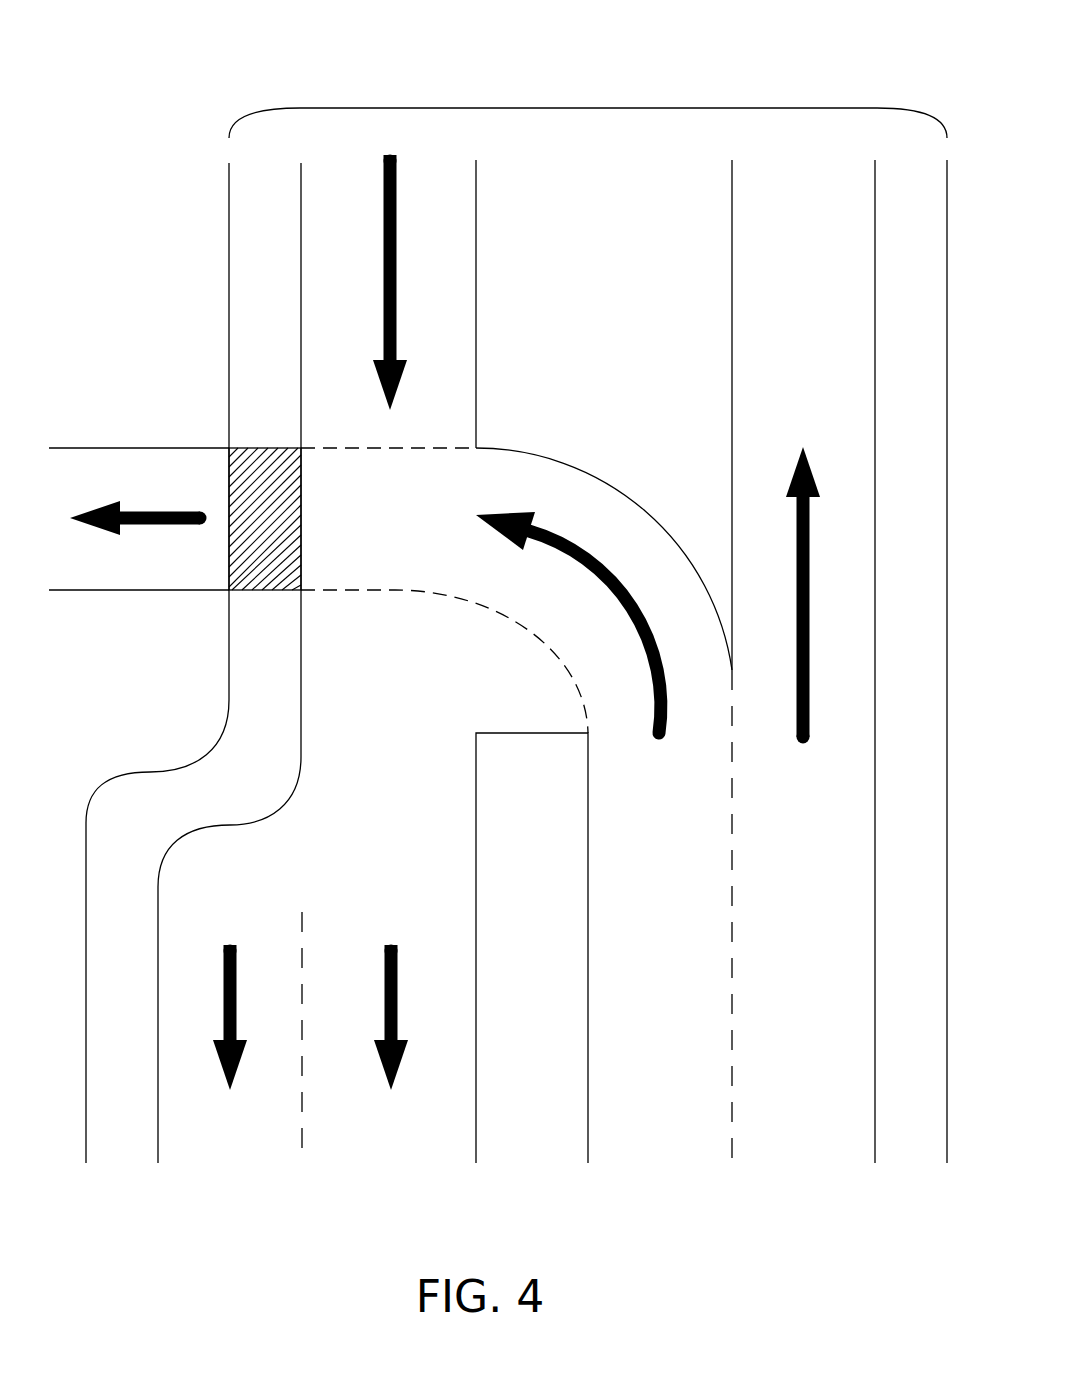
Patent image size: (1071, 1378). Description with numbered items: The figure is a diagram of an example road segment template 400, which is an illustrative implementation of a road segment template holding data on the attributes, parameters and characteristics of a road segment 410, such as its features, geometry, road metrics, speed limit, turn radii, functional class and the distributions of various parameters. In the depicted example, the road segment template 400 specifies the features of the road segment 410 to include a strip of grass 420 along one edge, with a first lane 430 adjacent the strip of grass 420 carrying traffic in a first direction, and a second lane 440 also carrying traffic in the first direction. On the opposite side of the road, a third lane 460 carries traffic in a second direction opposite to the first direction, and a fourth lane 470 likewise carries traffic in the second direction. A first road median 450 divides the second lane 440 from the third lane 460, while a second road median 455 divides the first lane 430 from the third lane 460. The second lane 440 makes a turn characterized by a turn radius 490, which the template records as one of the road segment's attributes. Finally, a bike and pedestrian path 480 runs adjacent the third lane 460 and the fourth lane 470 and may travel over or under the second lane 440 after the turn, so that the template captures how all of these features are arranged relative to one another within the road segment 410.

The road segment template 400 is at (226, 46).
The road segment 410 is at (588, 108).
The strip of grass 420 is at (910, 1146).
The first lane 430 is at (782, 976).
The second lane 440 is at (639, 976).
The first road median 450 is at (534, 1146).
The second road median 455 is at (585, 331).
The third lane 460 is at (370, 922).
The fourth lane 470 is at (209, 922).
The bike and pedestrian path 480 is at (266, 412).
The turn radius 490 is at (485, 626).